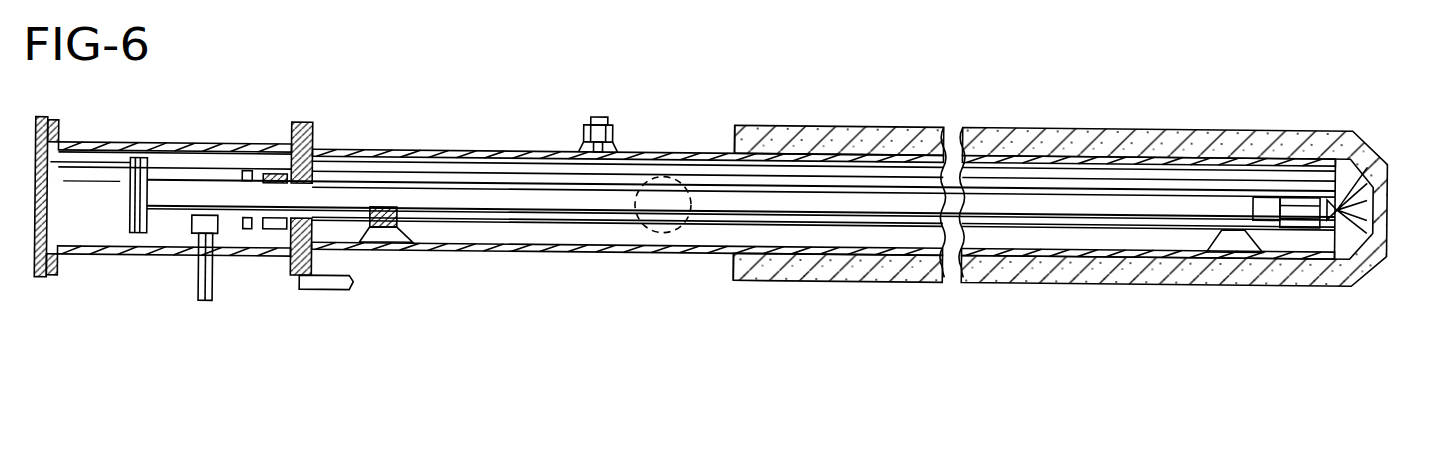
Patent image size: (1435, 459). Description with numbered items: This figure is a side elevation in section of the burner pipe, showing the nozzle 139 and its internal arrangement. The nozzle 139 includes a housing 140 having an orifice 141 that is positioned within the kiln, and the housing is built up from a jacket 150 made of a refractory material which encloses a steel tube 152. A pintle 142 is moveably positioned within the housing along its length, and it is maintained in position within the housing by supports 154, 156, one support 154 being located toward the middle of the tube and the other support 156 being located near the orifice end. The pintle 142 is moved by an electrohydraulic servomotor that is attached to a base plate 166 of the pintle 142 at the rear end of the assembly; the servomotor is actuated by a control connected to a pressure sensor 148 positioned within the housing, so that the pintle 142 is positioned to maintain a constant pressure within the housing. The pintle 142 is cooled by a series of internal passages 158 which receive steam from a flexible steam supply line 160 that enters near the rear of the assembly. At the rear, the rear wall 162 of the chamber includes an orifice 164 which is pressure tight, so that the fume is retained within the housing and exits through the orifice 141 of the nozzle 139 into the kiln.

The nozzle 139 is at (744, 116).
The housing 140 is at (841, 122).
The orifice 141 is at (1380, 220).
The pintle 142 is at (462, 199).
The pressure sensor 148 is at (598, 117).
The jacket 150 is at (1091, 124).
The steel tube 152 is at (666, 153).
The support 154 is at (392, 242).
The support 156 is at (1230, 242).
The internal passages 158 is at (1295, 214).
The flexible steam supply line 160 is at (197, 283).
The rear wall 162 is at (298, 125).
The orifice 164 is at (275, 234).
The base plate 166 is at (131, 232).